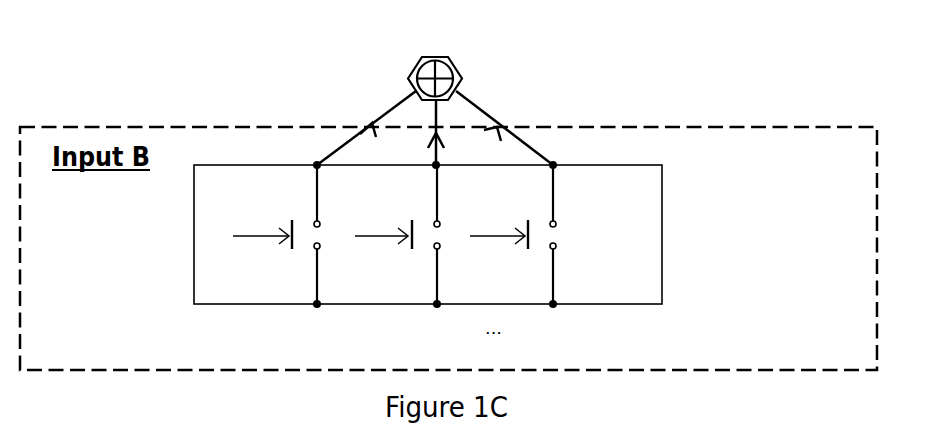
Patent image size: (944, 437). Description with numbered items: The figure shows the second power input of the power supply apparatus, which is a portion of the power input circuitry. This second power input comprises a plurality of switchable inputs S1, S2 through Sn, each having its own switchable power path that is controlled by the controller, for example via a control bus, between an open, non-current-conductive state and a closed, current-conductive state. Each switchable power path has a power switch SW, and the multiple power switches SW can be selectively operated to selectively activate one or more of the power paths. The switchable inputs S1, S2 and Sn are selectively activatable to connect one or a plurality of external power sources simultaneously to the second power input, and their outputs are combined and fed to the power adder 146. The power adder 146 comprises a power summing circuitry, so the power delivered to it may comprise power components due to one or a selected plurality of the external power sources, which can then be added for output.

The power adder 146 is at (470, 52).
The switchable input S1 is at (314, 255).
The switchable input S2 is at (435, 255).
The switchable input Sn is at (553, 255).
The power switch SW is at (381, 221).